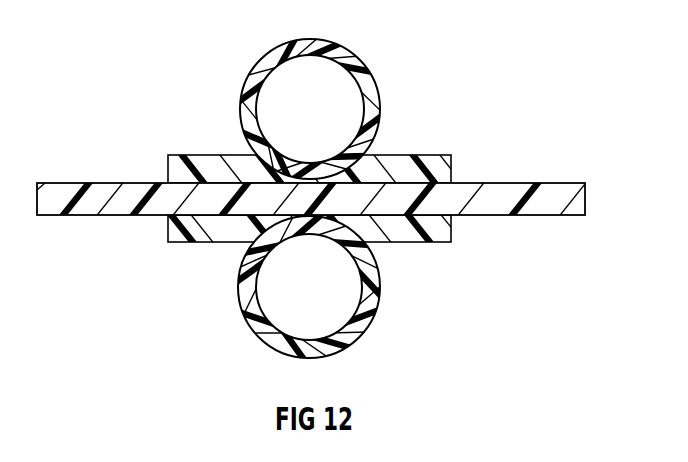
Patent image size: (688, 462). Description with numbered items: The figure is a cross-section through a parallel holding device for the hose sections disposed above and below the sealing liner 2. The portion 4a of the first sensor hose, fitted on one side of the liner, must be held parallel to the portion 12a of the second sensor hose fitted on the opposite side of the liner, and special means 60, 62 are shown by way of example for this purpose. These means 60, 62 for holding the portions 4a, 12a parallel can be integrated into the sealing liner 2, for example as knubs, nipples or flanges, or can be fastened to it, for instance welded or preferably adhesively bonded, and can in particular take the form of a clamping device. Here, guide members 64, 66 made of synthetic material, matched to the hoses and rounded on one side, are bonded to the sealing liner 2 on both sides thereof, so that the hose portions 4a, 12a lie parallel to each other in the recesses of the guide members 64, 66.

The sealing liner 2 is at (498, 192).
The portion of the first sensor hose 4a is at (328, 48).
The portion of the sensor hose 12a is at (252, 295).
The means for holding the portions parallel 60 is at (353, 101).
The means for holding the portions parallel 62 is at (331, 287).
The guide member 64 is at (433, 157).
The guide member 66 is at (452, 242).